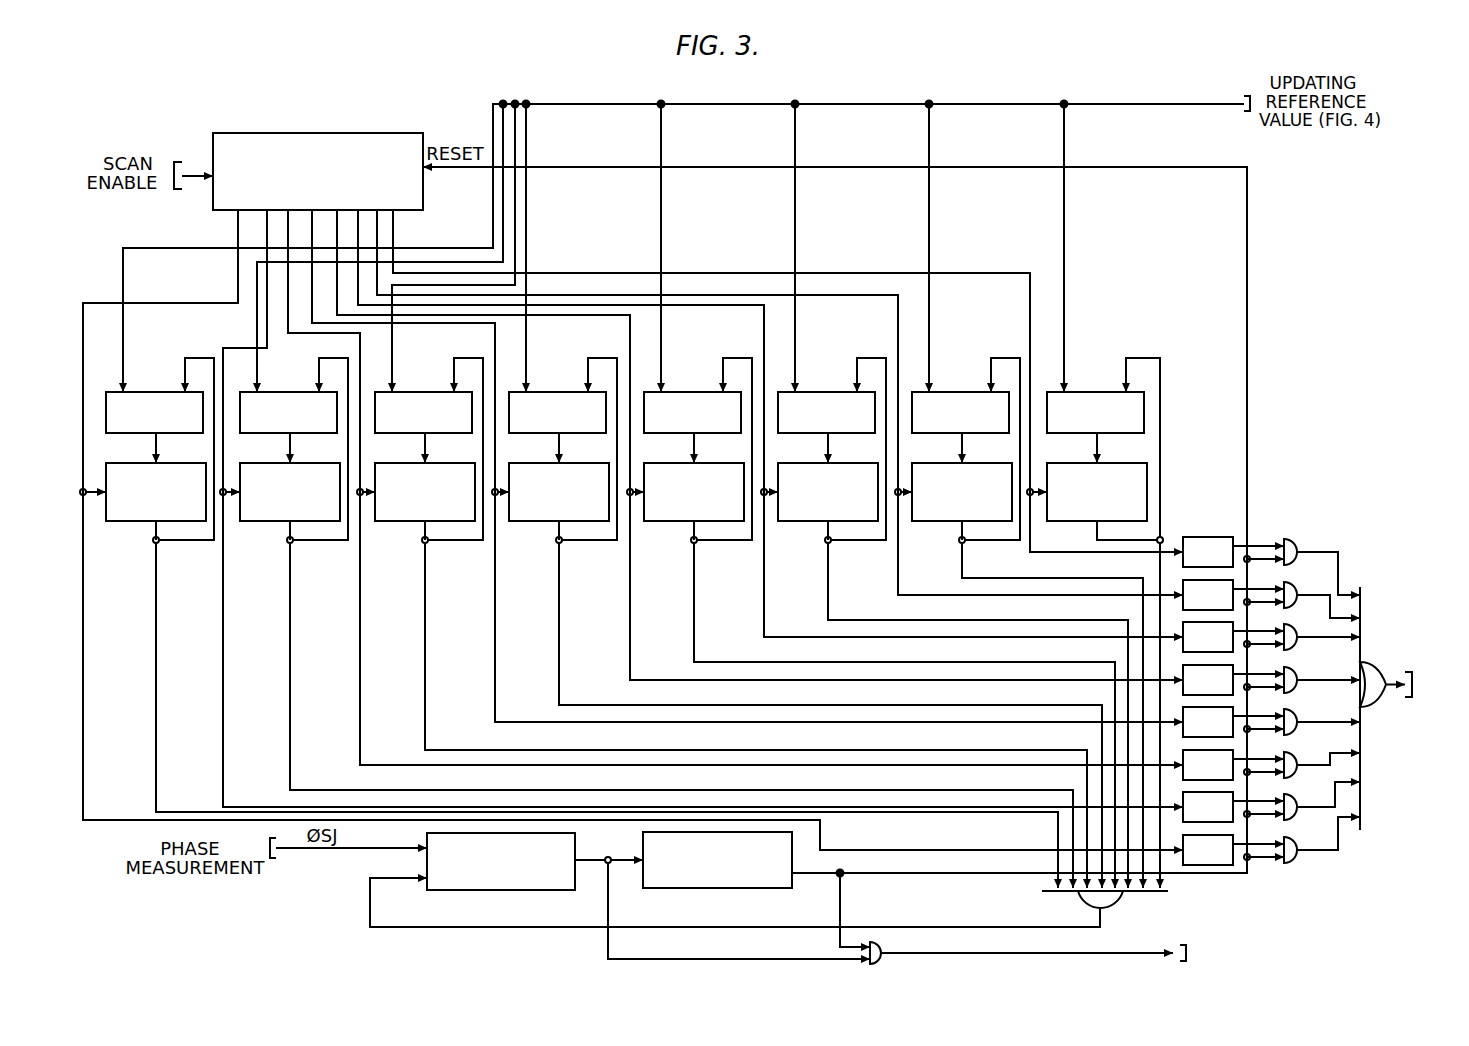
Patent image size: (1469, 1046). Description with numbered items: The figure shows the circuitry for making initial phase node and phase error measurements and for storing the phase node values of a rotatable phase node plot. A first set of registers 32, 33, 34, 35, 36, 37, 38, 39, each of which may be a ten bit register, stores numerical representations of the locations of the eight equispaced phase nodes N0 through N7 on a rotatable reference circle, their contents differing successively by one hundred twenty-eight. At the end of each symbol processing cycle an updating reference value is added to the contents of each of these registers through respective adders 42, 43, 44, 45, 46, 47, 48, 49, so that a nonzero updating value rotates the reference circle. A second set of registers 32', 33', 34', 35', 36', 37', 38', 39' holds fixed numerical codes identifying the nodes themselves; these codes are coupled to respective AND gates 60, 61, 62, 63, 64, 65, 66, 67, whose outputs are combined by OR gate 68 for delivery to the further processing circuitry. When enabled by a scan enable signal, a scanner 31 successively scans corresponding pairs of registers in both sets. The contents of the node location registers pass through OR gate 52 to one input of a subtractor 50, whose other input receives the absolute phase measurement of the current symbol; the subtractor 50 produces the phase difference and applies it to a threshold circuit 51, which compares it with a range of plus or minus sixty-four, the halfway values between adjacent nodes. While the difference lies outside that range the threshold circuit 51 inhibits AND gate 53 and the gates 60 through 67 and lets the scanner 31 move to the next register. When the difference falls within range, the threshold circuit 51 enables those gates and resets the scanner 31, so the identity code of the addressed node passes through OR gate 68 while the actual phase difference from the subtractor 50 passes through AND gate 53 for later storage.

The scanner 31 is at (320, 133).
The register 32 is at (571, 623).
The register 33 is at (648, 623).
The register 34 is at (724, 623).
The register 35 is at (799, 623).
The register 36 is at (873, 623).
The register 37 is at (946, 623).
The register 38 is at (1021, 623).
The register 39 is at (1095, 623).
The adder 42 is at (155, 392).
The adder 43 is at (289, 392).
The adder 44 is at (424, 392).
The adder 45 is at (558, 392).
The adder 46 is at (693, 392).
The adder 47 is at (827, 392).
The adder 48 is at (961, 392).
The adder 49 is at (1096, 392).
The subtractor 50 is at (504, 890).
The threshold circuit 51 is at (718, 888).
The OR gate 52 is at (1118, 902).
The AND gate 53 is at (884, 944).
The register 32' is at (1207, 881).
The register 33' is at (1222, 846).
The register 34' is at (1133, 752).
The register 35' is at (1140, 709).
The register 36' is at (1148, 666).
The register 37' is at (1156, 624).
The register 38' is at (1160, 582).
The register 39' is at (1203, 529).
The AND gate 60 is at (1290, 863).
The AND gate 61 is at (1300, 820).
The AND gate 62 is at (1292, 753).
The AND gate 63 is at (1292, 710).
The AND gate 64 is at (1292, 668).
The AND gate 65 is at (1292, 625).
The AND gate 66 is at (1292, 583).
The AND gate 67 is at (1292, 540).
The OR gate 68 is at (1372, 707).